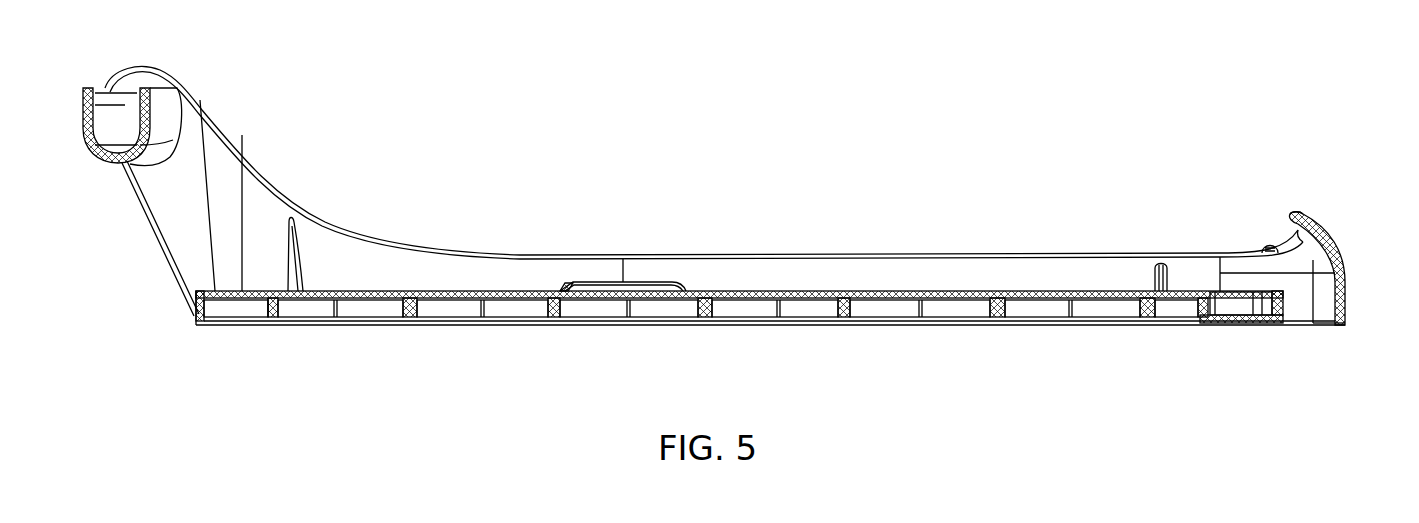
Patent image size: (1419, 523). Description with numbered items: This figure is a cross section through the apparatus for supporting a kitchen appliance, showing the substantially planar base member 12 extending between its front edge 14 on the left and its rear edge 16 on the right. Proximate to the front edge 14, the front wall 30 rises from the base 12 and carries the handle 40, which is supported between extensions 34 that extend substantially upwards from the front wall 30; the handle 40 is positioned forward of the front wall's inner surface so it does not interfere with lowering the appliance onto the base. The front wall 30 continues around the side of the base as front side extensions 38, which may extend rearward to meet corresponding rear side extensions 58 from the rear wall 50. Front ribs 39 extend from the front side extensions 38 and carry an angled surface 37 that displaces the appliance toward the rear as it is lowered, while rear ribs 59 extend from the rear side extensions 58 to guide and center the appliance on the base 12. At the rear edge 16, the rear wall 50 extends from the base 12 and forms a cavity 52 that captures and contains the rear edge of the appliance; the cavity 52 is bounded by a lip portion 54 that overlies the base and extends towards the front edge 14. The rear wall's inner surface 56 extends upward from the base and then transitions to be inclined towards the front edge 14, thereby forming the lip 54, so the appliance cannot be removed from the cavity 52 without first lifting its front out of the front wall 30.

The base member 12 is at (1097, 302).
The front edge 14 is at (196, 316).
The rear edge 16 is at (1348, 322).
The front wall 30 is at (280, 190).
The extensions 34 is at (233, 147).
The angled surface 37 is at (302, 240).
The front side extensions 38 is at (593, 252).
The front ribs 39 is at (286, 277).
The handle 40 is at (105, 87).
The rear wall 50 is at (1345, 245).
The cavity 52 is at (1258, 249).
The lip portion 54 is at (1297, 213).
The inner surface 56 is at (1297, 233).
The rear side extensions 58 is at (760, 252).
The rear ribs 59 is at (1150, 275).